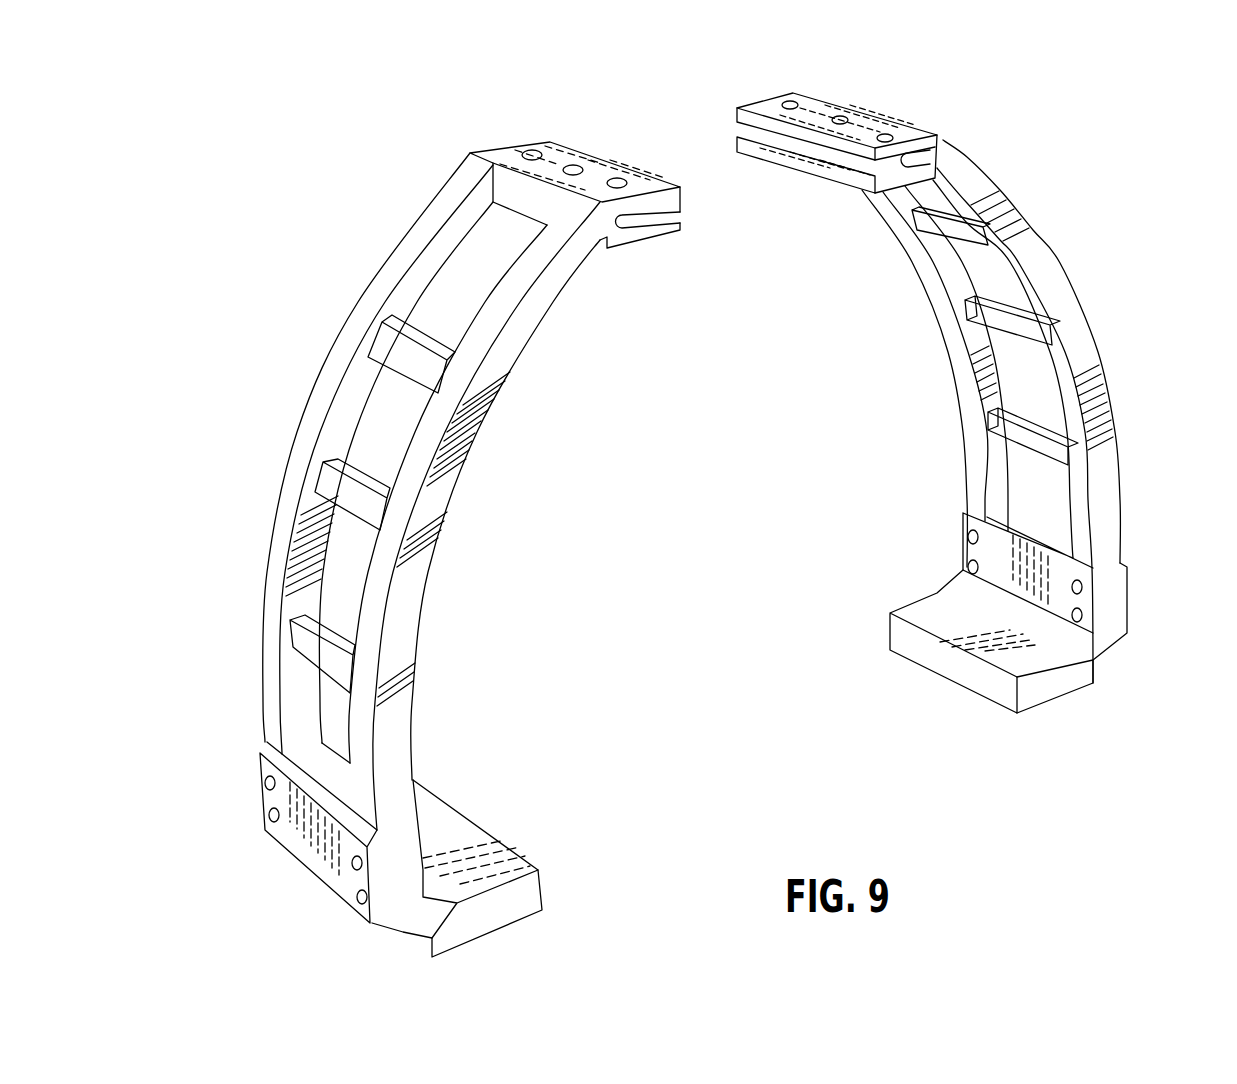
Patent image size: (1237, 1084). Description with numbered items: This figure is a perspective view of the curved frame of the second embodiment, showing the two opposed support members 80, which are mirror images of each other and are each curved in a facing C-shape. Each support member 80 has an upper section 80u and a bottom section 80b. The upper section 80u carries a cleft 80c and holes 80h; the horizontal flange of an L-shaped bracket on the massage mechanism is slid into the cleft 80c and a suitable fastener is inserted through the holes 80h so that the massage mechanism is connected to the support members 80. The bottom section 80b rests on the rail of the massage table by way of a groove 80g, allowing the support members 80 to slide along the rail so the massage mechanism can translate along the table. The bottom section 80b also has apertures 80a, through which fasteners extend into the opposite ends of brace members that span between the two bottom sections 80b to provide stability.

The support member 80 is at (377, 272).
The bottom section 80b is at (310, 840).
The cleft 80c is at (737, 123).
The hole 80h is at (837, 122).
The upper section 80u is at (943, 142).
The aperture 80a is at (1083, 587).
The groove 80g is at (1097, 670).